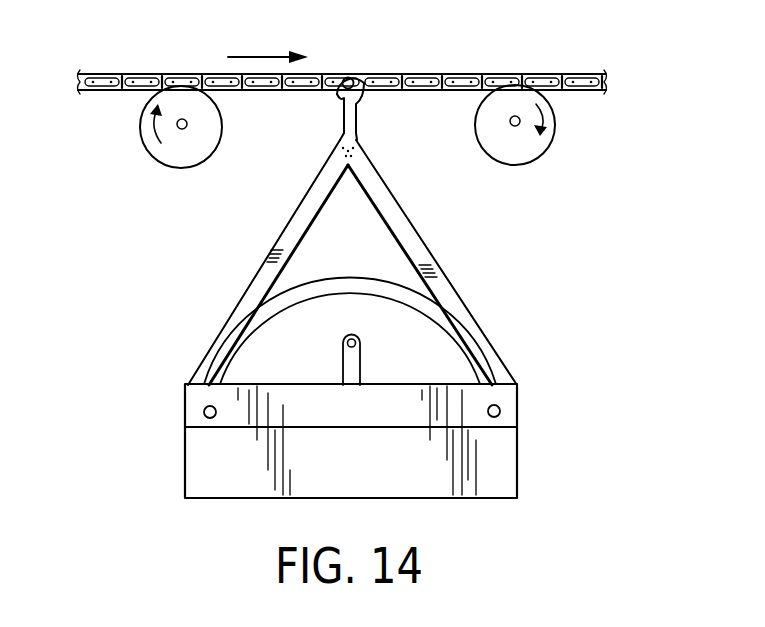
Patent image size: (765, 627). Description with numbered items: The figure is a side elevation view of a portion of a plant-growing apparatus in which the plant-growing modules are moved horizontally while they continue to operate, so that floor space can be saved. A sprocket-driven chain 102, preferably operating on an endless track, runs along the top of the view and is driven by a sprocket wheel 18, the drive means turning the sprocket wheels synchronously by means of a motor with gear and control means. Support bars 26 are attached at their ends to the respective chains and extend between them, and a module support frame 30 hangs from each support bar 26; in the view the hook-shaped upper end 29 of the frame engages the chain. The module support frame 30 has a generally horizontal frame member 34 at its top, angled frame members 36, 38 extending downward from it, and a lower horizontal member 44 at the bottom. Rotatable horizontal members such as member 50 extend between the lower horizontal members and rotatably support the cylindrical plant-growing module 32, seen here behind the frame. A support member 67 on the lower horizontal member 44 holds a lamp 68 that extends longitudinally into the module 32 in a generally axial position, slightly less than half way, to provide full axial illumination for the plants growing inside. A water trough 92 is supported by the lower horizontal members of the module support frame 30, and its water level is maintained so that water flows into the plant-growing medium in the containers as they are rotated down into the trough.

The sprocket-driven chain 102 is at (581, 72).
The sprocket wheel 18 is at (163, 158).
The hook loop 29 is at (340, 78).
The support bar 26 is at (342, 95).
The horizontal frame member 34 is at (364, 142).
The module support frame 30 is at (328, 319).
The angled frame member 36 is at (250, 287).
The angled frame member 38 is at (481, 345).
The cylindrical plant-growing module 32 is at (470, 245).
The lower horizontal member 44 is at (504, 395).
The water trough 92 is at (495, 457).
The rotatable horizontal member 50 is at (204, 412).
The support member 67 is at (356, 362).
The lamp 68 is at (355, 338).